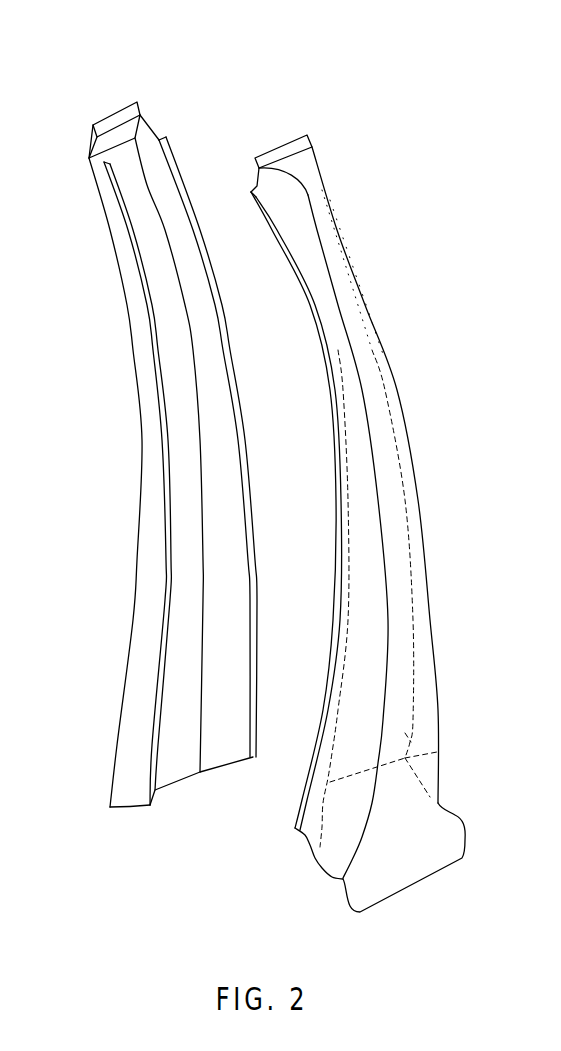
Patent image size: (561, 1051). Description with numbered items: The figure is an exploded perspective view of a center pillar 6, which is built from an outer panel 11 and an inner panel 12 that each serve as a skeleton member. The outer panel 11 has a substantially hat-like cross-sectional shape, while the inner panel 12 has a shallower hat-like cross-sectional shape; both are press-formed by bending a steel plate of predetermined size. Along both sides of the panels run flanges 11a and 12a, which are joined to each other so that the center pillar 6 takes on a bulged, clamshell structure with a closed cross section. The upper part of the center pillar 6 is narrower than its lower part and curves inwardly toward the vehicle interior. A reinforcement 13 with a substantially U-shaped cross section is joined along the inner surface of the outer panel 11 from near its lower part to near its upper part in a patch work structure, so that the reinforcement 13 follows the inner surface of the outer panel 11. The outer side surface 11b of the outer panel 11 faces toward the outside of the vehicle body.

The center pillar 6 is at (302, 53).
The outer panel 11 is at (278, 140).
The flange 11a is at (343, 235).
The outer side surface 11b is at (397, 813).
The inner panel 12 is at (115, 108).
The flange 12a is at (160, 413).
The reinforcement 13 is at (312, 868).